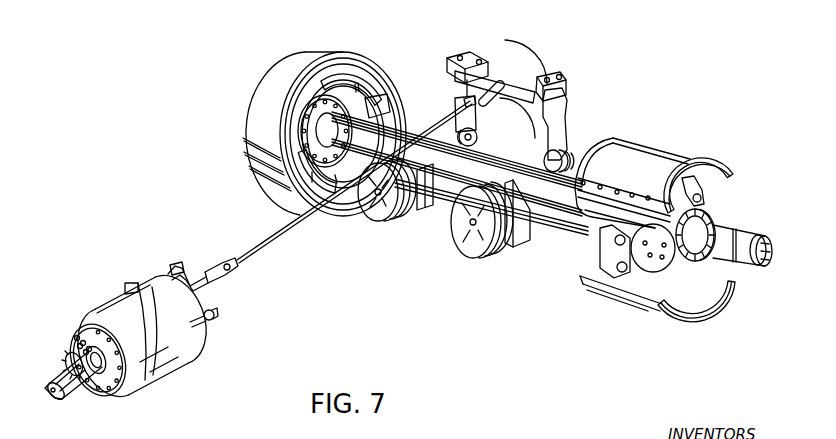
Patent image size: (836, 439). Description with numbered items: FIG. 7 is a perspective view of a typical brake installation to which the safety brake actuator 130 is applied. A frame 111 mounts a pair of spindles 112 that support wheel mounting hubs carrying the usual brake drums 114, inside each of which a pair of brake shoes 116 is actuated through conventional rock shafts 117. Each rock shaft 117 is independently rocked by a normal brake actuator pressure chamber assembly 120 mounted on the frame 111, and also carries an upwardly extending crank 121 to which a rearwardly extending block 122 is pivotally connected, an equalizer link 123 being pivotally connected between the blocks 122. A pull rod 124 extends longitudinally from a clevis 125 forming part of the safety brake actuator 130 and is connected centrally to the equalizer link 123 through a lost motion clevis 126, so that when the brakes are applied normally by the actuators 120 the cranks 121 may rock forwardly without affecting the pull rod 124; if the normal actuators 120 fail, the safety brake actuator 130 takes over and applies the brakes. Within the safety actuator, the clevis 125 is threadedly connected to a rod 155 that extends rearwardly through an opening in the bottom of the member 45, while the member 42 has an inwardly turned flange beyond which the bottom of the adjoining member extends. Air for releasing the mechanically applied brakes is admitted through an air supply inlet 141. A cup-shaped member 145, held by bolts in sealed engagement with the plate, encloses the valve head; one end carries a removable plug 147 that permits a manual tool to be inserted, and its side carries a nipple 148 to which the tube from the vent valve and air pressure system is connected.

The spindles 112 is at (730, 233).
The brake drums 114 is at (301, 64).
The brake shoes 116 is at (382, 80).
The rock shafts 117 is at (410, 127).
The brake actuator pressure chamber assembly 120 is at (376, 222).
The upwardly extending crank 121 is at (563, 107).
The rearwardly extending block 122 is at (483, 56).
The equalizer link 123 is at (487, 75).
The pull rod 124 is at (287, 232).
The clevis 125 is at (225, 262).
The lost motion clevis 126 is at (523, 95).
The frame 111 is at (460, 190).
The safety brake actuator 130 is at (105, 293).
The air supply inlet 141 is at (76, 337).
The nipple 148 is at (67, 362).
The member 45 is at (199, 333).
The member 42 is at (163, 368).
The cup-shaped member 145 is at (77, 387).
The plug 147 is at (52, 396).
The rod 155 is at (192, 285).